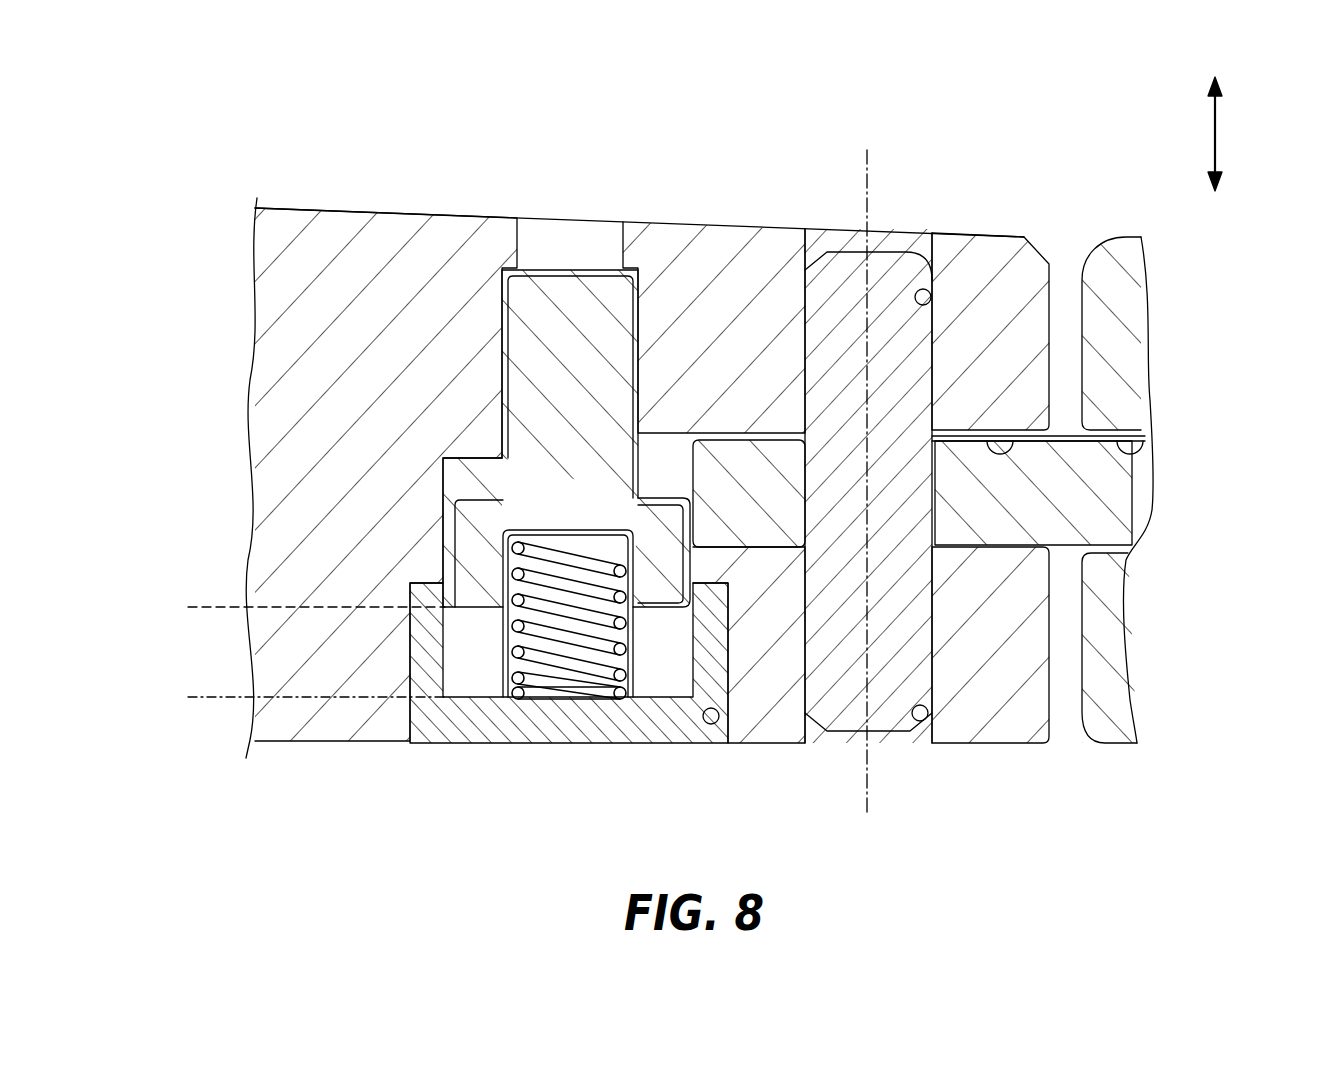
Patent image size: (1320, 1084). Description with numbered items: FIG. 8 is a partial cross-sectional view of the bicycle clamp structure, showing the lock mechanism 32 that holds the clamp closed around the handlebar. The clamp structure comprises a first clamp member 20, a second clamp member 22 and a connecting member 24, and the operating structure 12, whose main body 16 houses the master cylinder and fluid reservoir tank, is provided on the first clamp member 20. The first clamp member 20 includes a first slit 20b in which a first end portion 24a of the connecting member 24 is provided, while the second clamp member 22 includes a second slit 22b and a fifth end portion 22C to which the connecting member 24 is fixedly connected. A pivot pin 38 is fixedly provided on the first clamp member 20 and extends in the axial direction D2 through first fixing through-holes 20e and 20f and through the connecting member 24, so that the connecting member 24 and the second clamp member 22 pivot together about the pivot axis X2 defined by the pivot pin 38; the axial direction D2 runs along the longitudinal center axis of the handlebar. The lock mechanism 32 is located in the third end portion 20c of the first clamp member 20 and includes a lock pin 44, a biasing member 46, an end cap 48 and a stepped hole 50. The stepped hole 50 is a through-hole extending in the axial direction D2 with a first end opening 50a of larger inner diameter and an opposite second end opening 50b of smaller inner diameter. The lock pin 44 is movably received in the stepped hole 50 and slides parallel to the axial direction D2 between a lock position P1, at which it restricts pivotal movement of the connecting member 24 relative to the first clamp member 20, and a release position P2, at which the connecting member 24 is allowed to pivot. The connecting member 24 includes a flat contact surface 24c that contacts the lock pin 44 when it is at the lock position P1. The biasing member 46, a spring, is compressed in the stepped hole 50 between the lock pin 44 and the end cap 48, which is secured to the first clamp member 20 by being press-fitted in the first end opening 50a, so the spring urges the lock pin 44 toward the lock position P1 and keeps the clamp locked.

The operating structure 12 is at (190, 276).
The main body 16 is at (240, 262).
The first clamp member 20 is at (758, 190).
The first slit 20b is at (1008, 436).
The third end portion 20c is at (787, 245).
The first fixing through-hole 20e is at (921, 725).
The first fixing through-hole 20f is at (917, 286).
The second clamp member 22 is at (1127, 232).
The second slit 22b is at (1148, 447).
The fifth end portion 22C is at (1130, 300).
The connecting member 24 is at (1142, 519).
The first end portion 24a is at (742, 525).
The contact surface 24c is at (690, 477).
The lock mechanism 32 is at (378, 790).
The pivot pin 38 is at (880, 714).
The lock pin 44 is at (497, 328).
The biasing member 46 is at (633, 682).
The end cap 48 is at (446, 744).
The stepped hole 50 is at (493, 532).
The first end opening 50a is at (710, 726).
The second end opening 50b is at (520, 250).
The pivot axis X2 is at (884, 158).
The axial direction D2 is at (1219, 130).
The lock position P1 is at (297, 607).
The release position P2 is at (297, 697).